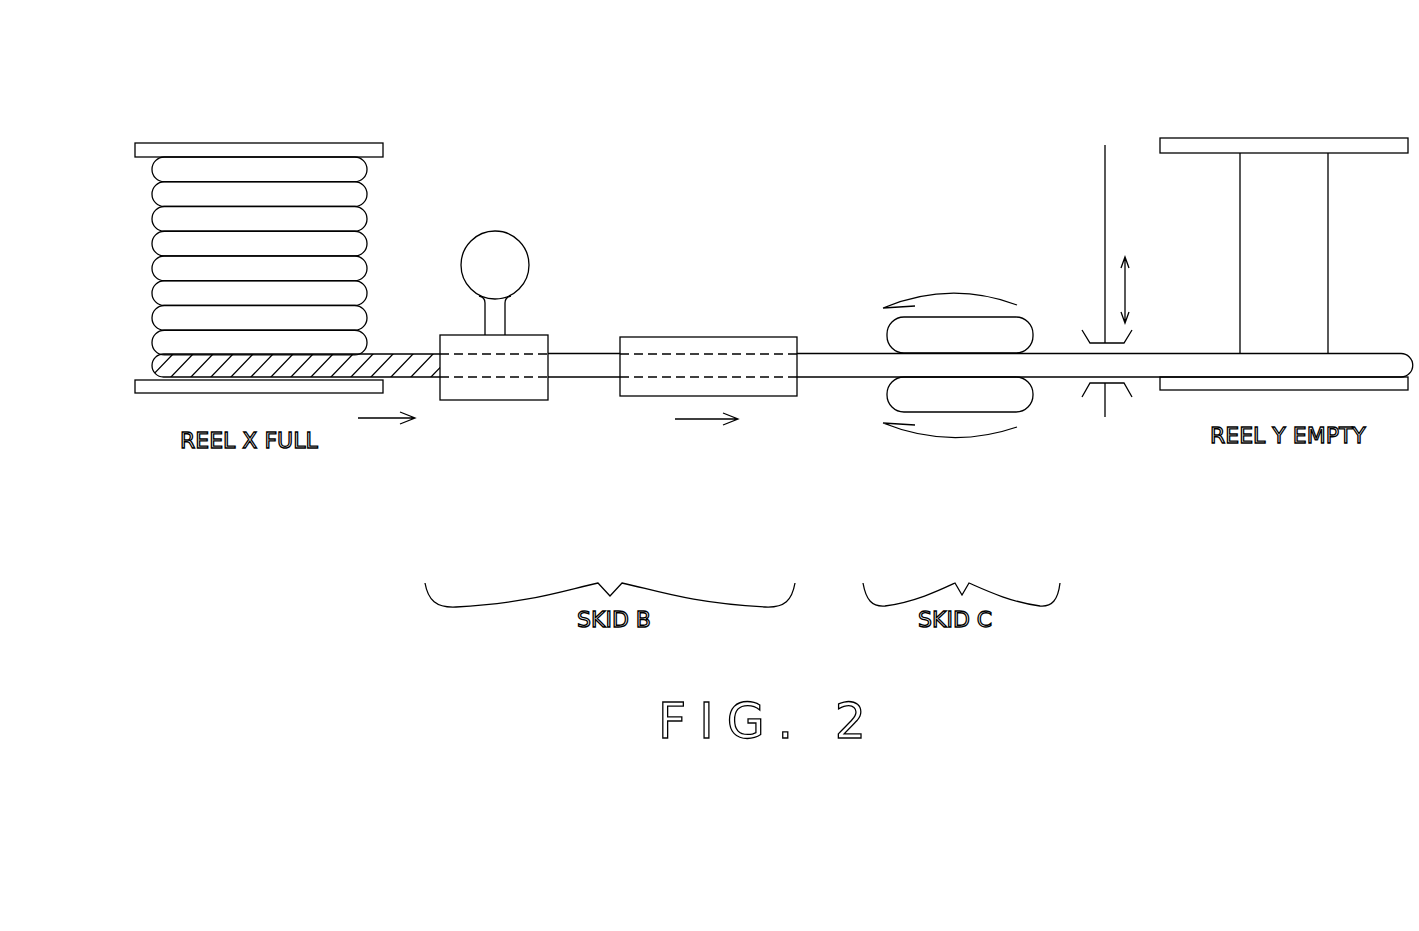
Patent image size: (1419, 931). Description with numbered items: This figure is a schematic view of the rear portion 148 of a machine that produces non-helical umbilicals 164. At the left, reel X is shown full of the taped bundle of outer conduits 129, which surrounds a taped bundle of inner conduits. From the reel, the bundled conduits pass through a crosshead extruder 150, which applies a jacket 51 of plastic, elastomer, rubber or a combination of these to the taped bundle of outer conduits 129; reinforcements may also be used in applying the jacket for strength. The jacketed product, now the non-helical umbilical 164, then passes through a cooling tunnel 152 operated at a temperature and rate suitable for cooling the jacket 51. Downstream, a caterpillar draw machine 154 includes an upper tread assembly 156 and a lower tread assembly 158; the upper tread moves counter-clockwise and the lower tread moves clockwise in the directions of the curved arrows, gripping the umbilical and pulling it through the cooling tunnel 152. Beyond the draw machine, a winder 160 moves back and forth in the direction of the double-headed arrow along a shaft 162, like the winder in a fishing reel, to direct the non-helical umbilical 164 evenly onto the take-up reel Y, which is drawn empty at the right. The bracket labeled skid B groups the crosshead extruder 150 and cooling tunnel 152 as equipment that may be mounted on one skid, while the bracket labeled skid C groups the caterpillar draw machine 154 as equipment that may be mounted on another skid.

The rear portion 148 is at (703, 110).
The taped bundle of outer conduits 129 is at (401, 355).
The crosshead extruder 150 is at (485, 400).
The jacket 51 is at (593, 351).
The cooling tunnel 152 is at (665, 337).
The non-helical umbilical 164 is at (763, 379).
The caterpillar draw machine 154 is at (974, 343).
The upper tread assembly 156 is at (1027, 317).
The lower tread assembly 158 is at (1033, 412).
The winder 160 is at (1084, 396).
The shaft 162 is at (1105, 173).